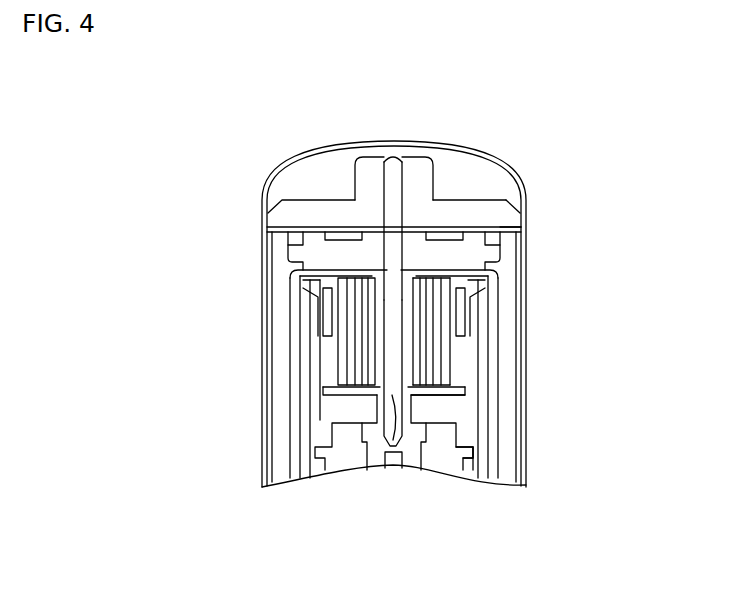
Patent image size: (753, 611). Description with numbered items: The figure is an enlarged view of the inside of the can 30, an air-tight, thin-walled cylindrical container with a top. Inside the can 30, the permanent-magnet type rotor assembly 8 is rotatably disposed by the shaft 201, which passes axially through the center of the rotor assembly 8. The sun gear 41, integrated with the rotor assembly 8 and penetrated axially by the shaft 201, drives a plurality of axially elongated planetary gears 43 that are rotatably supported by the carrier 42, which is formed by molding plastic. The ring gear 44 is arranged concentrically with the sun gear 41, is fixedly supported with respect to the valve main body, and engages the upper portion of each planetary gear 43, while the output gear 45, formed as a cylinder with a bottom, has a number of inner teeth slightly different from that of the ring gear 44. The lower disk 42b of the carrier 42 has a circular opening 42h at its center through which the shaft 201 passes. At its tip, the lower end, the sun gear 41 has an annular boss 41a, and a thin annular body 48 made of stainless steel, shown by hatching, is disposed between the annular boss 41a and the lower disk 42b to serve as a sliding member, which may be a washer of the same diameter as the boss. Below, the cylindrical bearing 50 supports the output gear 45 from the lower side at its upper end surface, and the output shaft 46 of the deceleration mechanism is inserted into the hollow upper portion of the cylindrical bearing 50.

The shaft 201 is at (396, 157).
The can 30 is at (487, 157).
The rotor assembly 8 is at (507, 228).
The planetary gears 43 is at (337, 306).
The lower disk 42b is at (357, 397).
The output gear 45 is at (325, 417).
The carrier 42 is at (342, 407).
The circular opening 42h is at (389, 470).
The output shaft 46 is at (409, 467).
The cylindrical bearing 50 is at (452, 470).
The ring gear 44 is at (477, 320).
The sun gear 41 is at (405, 355).
The annular boss 41a is at (403, 378).
The annular body 48 is at (428, 393).